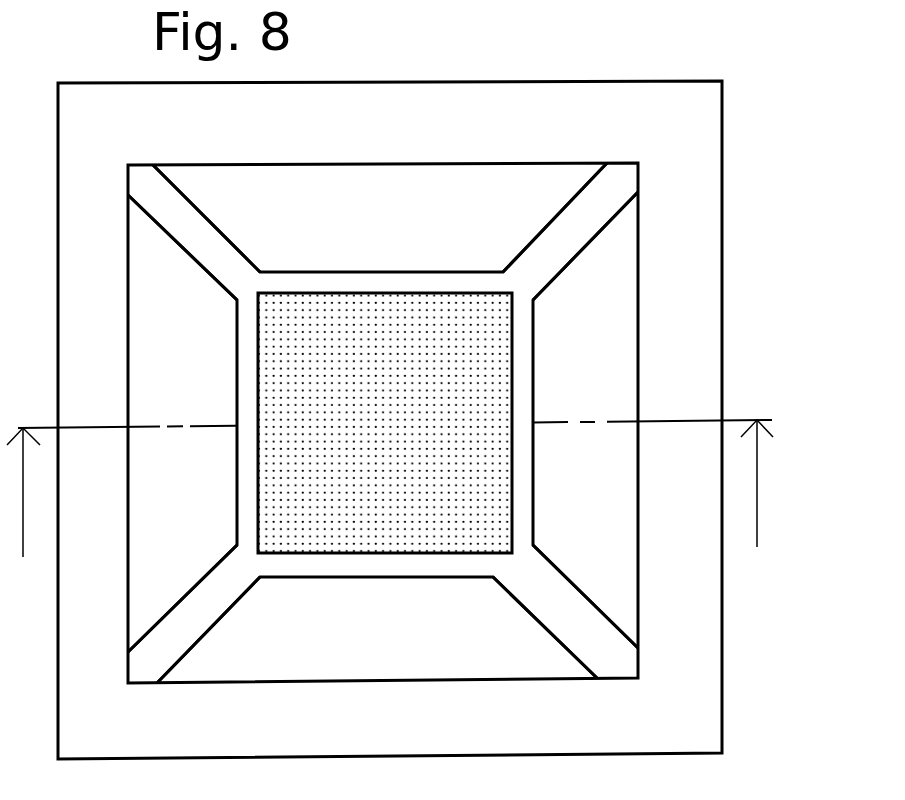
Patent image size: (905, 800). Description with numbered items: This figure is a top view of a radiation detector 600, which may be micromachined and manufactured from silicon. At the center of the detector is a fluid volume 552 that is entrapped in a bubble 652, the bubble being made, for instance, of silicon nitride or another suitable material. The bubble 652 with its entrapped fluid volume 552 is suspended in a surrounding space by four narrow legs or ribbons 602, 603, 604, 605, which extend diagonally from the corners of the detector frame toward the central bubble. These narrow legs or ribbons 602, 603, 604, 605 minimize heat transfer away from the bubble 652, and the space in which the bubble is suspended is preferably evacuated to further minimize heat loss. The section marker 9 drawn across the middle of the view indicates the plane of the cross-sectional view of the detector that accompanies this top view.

The radiation detector 600 is at (553, 79).
The narrow leg or ribbon 602 is at (552, 252).
The narrow leg or ribbon 603 is at (232, 258).
The narrow leg or ribbon 604 is at (200, 603).
The narrow leg or ribbon 605 is at (537, 586).
The fluid volume 552 is at (490, 391).
The bubble 652 is at (250, 370).
The section line 9- 9 is at (390, 515).